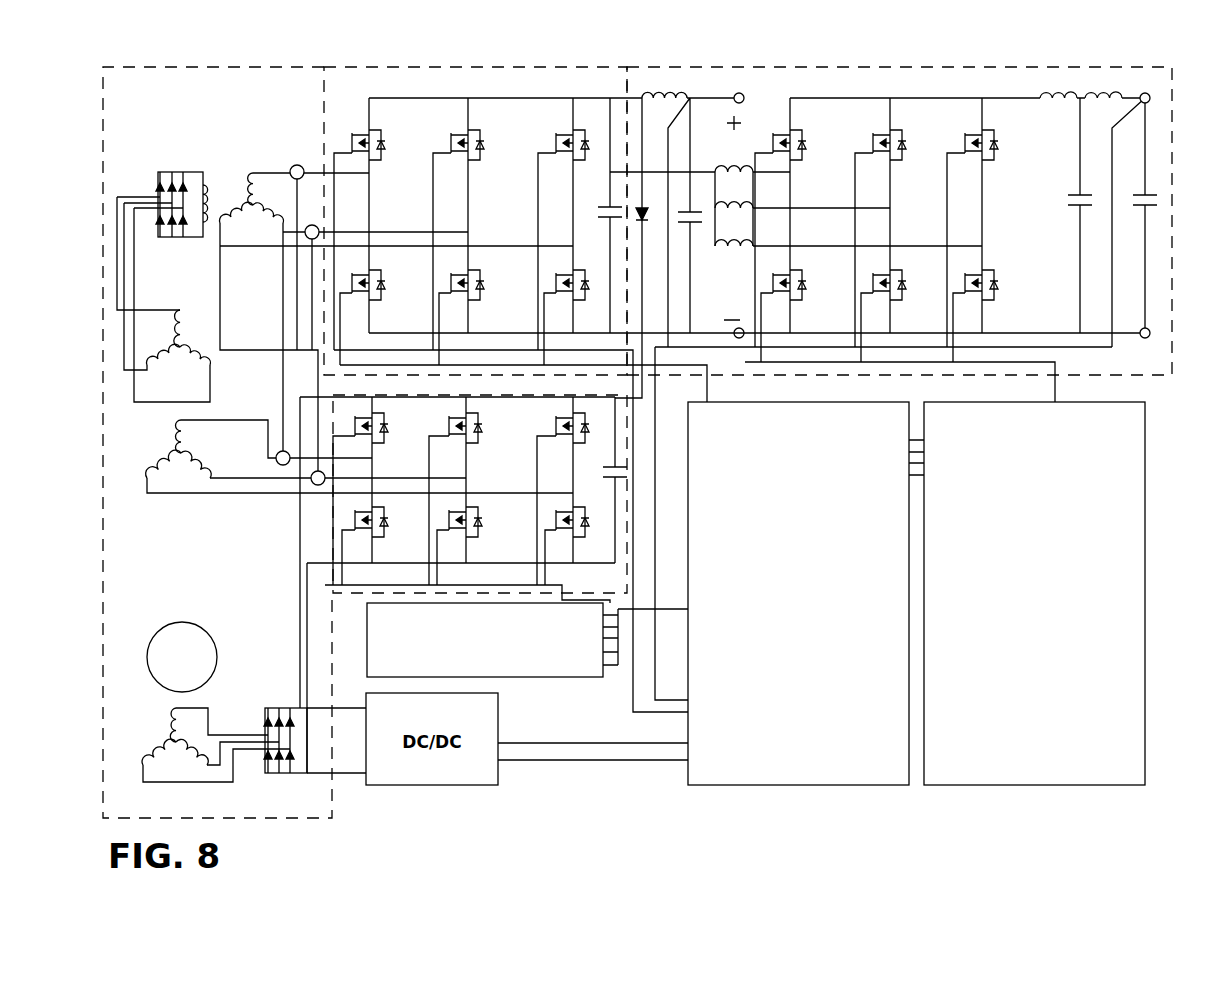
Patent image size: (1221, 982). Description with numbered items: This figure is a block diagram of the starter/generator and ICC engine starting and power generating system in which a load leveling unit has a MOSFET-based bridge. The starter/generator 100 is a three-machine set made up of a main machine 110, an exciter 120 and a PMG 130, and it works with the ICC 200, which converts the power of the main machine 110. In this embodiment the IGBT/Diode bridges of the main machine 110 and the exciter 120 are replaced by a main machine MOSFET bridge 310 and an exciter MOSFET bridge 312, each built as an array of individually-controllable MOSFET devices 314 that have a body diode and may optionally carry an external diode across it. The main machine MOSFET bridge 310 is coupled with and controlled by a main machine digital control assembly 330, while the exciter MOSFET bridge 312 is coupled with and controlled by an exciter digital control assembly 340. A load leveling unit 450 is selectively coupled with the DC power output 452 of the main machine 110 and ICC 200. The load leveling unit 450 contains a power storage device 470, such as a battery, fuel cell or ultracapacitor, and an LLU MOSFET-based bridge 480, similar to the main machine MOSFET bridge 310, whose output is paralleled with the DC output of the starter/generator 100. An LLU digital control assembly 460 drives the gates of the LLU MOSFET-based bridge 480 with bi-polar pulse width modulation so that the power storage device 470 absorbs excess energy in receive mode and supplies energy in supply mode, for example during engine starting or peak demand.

The starter/generator 100 is at (190, 65).
The main machine 110 is at (268, 165).
The exciter 120 is at (178, 165).
The PMG 130 is at (185, 617).
The ICC 200 is at (358, 62).
The main machine MOSFET bridge 310 is at (600, 368).
The exciter MOSFET bridge 312 is at (505, 420).
The MOSFET device 314 is at (445, 146).
The main machine digital control assembly 330 is at (784, 433).
The exciter digital control assembly 340 is at (564, 635).
The load leveling unit 450 is at (810, 62).
The DC power output 452 is at (586, 95).
The LLU digital control assembly 460 is at (1021, 433).
The power storage device 470 is at (1157, 185).
The LLU MOSFET-based bridge 480 is at (905, 95).